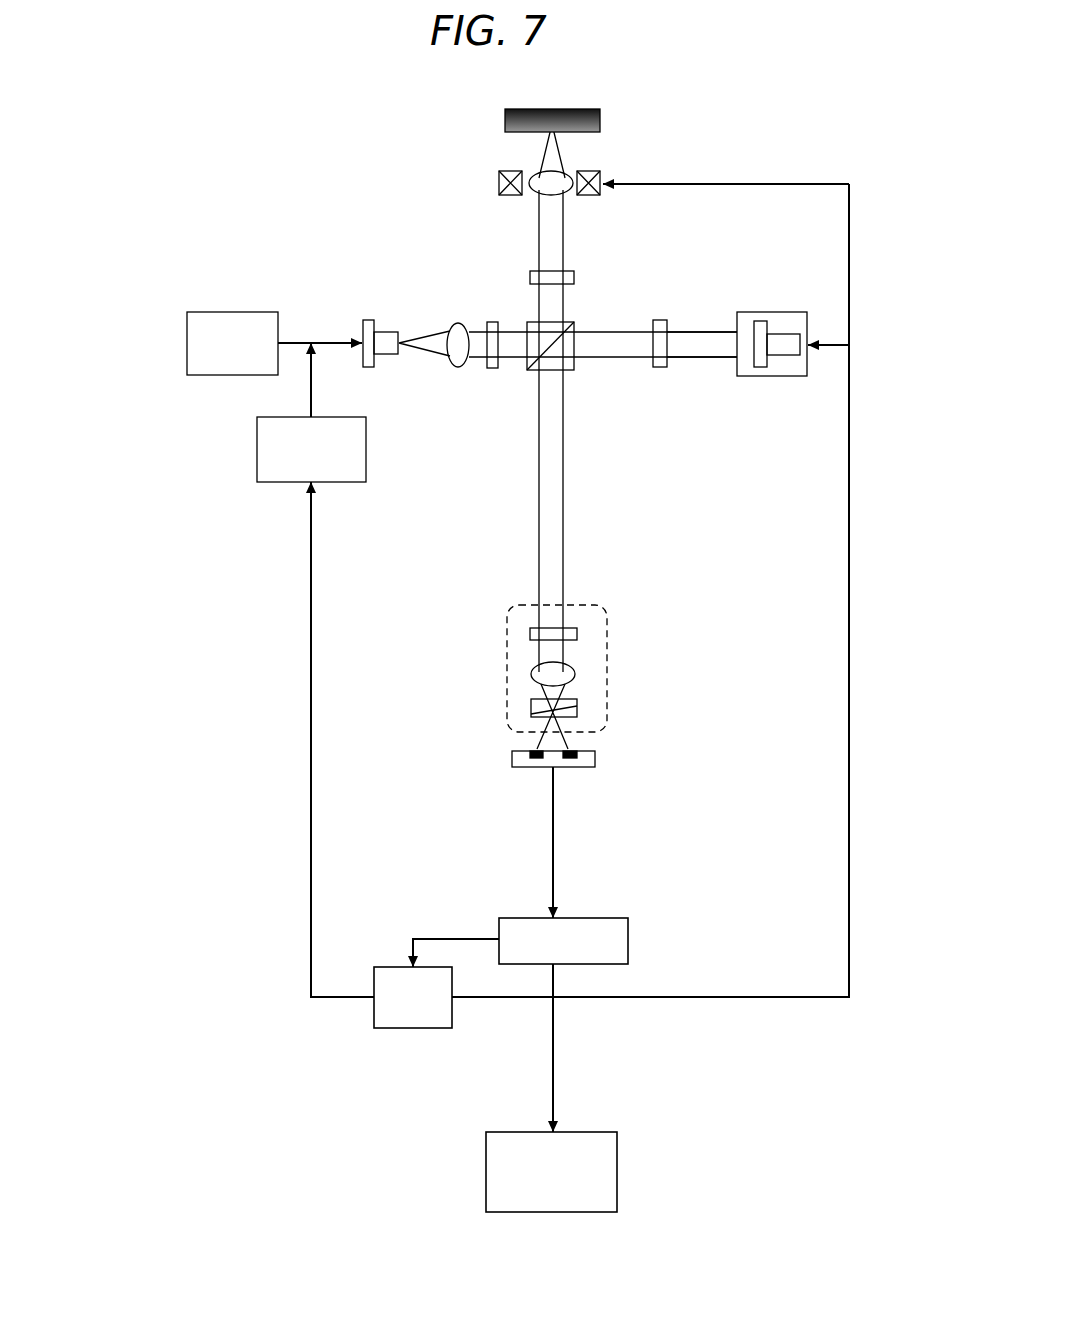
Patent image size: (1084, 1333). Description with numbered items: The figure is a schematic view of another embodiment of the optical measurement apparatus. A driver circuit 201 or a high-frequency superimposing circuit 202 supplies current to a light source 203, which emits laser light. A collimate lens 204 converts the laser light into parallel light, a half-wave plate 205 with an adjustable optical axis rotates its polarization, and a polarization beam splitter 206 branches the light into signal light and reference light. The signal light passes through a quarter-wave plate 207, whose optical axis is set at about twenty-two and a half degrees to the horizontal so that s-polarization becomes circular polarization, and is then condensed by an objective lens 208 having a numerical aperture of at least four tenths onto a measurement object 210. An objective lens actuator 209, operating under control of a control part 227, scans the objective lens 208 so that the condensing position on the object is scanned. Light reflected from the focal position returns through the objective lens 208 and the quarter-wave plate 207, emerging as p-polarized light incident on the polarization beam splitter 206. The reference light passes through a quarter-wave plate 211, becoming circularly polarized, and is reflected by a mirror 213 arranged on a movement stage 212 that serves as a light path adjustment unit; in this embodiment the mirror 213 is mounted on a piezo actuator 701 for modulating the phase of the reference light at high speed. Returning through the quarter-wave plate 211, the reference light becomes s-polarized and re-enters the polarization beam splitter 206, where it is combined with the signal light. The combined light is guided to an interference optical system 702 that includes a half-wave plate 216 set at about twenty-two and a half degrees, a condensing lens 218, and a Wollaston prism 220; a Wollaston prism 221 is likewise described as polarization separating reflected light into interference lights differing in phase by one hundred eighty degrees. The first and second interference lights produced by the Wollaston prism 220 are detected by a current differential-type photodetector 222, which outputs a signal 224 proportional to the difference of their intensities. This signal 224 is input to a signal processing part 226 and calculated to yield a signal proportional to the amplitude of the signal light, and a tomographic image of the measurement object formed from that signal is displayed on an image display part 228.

The driver circuit 201 is at (187, 343).
The high-frequency superimposing circuit 202 is at (257, 455).
The light source 203 is at (363, 320).
The collimate lens 204 is at (450, 330).
The λ/2 plate 205 is at (488, 362).
The polarization beam splitter 206 is at (530, 322).
The λ/4 plate 207 is at (528, 279).
The objective lens 208 is at (563, 190).
The objective lens actuator 209 is at (600, 177).
The measurement object 210 is at (506, 118).
The λ/4 plate 211 is at (663, 320).
The movement stage 212 is at (750, 312).
The mirror 213 is at (763, 322).
The piezo actuator 701 is at (780, 355).
The Wollaston prism 221 is at (704, 389).
The interference optical system 702 is at (506, 631).
The λ/2 plate 216 is at (577, 631).
The condensing lens 218 is at (577, 674).
The Wollaston prism 220 is at (577, 704).
The current differential-type photodetector 222 is at (595, 757).
The signal 224 is at (553, 788).
The signal processing part 226 is at (500, 918).
The control part 227 is at (383, 1028).
The image display part 228 is at (617, 1172).